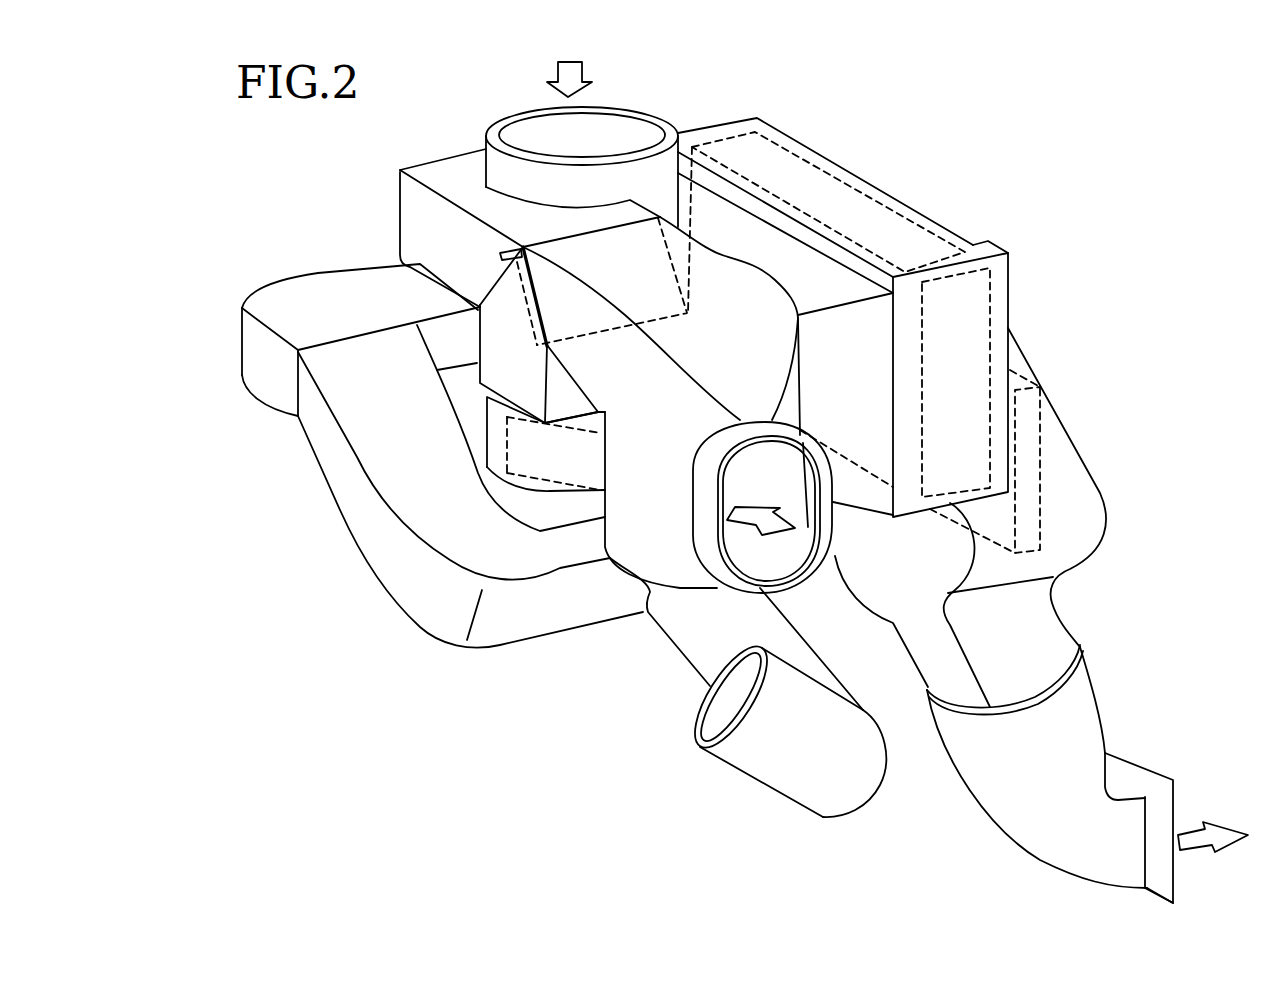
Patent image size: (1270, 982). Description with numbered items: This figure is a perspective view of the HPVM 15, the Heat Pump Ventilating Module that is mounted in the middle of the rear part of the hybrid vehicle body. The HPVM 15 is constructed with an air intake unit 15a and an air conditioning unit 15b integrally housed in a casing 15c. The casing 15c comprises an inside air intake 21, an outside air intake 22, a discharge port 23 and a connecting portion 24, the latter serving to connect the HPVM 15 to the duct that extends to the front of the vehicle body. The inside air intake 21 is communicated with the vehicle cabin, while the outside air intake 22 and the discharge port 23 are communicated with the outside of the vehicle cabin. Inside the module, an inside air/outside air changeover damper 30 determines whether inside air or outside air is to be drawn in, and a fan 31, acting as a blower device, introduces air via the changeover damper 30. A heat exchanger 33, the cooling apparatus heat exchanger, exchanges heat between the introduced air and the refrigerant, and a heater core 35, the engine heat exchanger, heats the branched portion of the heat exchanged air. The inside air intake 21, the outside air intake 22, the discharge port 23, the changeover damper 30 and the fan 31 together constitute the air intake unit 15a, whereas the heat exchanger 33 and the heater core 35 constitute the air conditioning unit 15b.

The HPVM (Heat Pump Ventilating Module) 15 is at (868, 130).
The air intake unit 15a is at (658, 115).
The air conditioning unit 15b is at (781, 133).
The casing 15c is at (1010, 283).
The inside air intake 21 is at (523, 140).
The outside air intake 22 is at (793, 568).
The discharge port 23 is at (713, 740).
The connecting portion 24 is at (1177, 803).
The inside air/outside air changeover damper 30 is at (521, 265).
The fan 31 is at (545, 493).
The heat exchanger 33 is at (883, 207).
The heater core 35 is at (1043, 483).